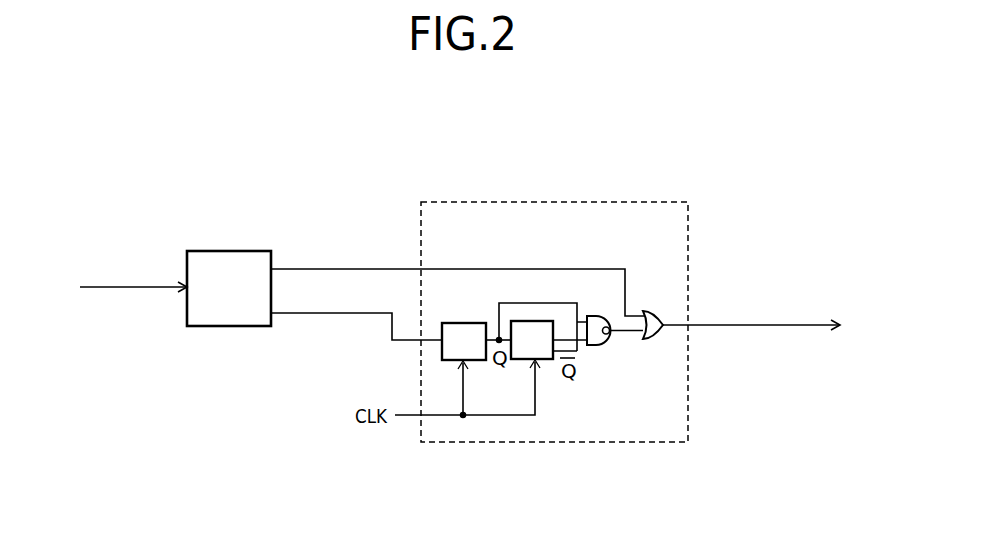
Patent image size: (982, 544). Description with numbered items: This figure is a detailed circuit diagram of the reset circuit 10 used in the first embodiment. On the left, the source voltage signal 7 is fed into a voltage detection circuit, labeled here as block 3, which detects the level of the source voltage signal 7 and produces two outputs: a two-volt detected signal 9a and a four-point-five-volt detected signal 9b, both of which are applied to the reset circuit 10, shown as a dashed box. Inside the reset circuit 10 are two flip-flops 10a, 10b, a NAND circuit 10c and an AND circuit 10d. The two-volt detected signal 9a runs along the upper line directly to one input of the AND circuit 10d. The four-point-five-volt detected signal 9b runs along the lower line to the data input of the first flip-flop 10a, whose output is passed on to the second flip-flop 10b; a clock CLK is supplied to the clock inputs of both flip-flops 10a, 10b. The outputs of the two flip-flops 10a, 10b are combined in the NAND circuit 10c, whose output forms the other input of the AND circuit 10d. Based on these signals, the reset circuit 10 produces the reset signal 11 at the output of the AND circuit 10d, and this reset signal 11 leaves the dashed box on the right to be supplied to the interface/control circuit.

The source voltage signal 7 is at (125, 287).
The voltage detection circuit 3 is at (230, 251).
The 2V detected signal 9a is at (299, 269).
The 4.5V detected signal 9b is at (297, 313).
The reset circuit 10 is at (539, 202).
The flip-flop 10a is at (457, 323).
The flip-flop 10b is at (547, 359).
The NAND circuit 10c is at (598, 345).
The AND circuit 10d is at (643, 313).
The reset signal 11 is at (735, 325).